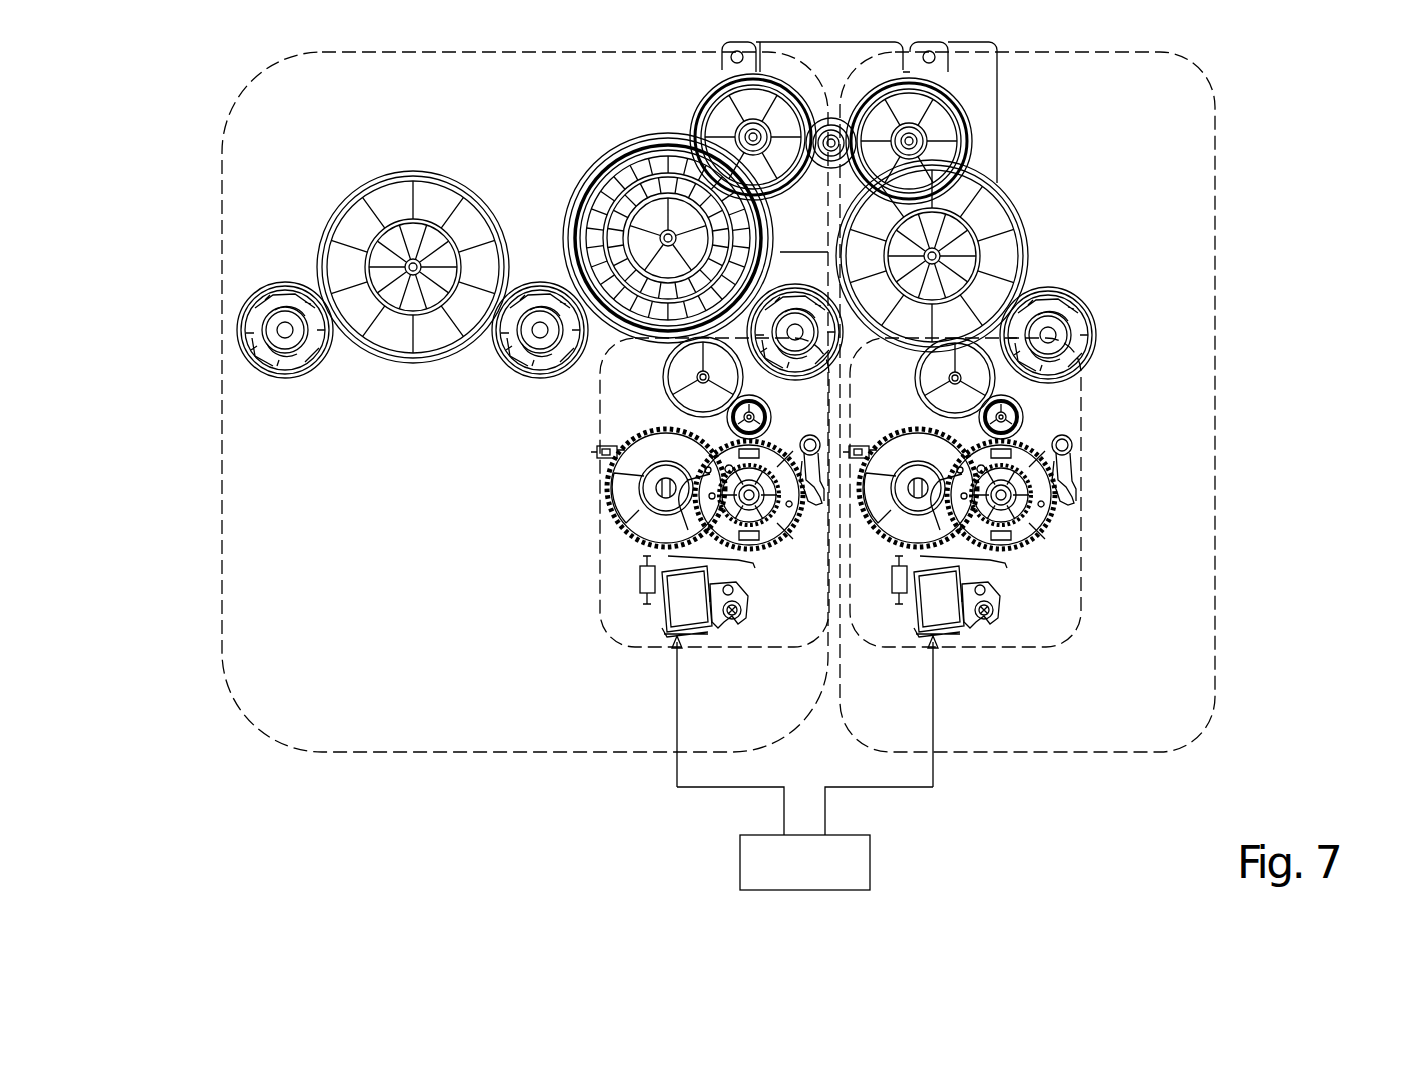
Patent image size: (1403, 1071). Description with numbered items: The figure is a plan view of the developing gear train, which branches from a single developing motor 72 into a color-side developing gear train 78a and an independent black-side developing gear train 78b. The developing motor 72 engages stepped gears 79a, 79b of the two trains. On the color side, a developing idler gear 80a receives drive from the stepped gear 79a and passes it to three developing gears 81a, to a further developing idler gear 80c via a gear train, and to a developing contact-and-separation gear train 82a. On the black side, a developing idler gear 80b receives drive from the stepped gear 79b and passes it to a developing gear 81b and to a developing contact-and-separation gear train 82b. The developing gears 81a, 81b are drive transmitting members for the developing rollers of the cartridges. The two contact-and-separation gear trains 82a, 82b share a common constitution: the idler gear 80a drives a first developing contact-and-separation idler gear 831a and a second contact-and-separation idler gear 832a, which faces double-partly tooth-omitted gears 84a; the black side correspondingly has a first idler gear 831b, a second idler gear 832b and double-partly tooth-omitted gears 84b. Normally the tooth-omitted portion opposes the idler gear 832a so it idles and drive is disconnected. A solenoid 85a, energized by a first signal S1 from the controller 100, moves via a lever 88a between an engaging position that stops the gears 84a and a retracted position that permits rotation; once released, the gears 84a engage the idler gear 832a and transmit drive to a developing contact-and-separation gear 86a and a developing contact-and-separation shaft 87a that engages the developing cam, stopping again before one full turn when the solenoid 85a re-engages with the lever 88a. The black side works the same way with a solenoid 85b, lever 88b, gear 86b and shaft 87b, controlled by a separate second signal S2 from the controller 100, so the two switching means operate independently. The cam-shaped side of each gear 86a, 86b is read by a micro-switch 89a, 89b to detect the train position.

The developing motor 72 is at (831, 125).
The developing gear train 78a is at (222, 178).
The developing gear train 78b is at (1218, 165).
The stepped gear 79a is at (720, 83).
The stepped gear 79b is at (953, 123).
The developing idler gear 80a is at (598, 165).
The developing idler gear 80b is at (993, 215).
The developing idler gear 80c is at (348, 235).
The developing gear 81a is at (292, 382).
The developing gear 81b is at (1075, 325).
The developing contact-and-separation gear train 82a is at (606, 640).
The developing contact-and-separation gear train 82b is at (1083, 575).
The first developing contact-and-separation idler gear 831a is at (665, 378).
The first developing contact-and-separation idler gear 831b is at (993, 388).
The second contact-and-separation idler gear 832a is at (732, 417).
The second developing contact-and-separation idler gear 832b is at (1018, 418).
The double-partly tooth-omitted gears 84a is at (740, 634).
The double-partly tooth-omitted gears 84b is at (1000, 632).
The solenoid 85a is at (700, 618).
The solenoid 85b is at (945, 622).
The developing contact-and-separation gear 86a is at (635, 512).
The developing contact-and-separation gear 86b is at (885, 510).
The developing contact-and-separation shaft 87a is at (640, 572).
The developing contact-and-separation shaft 87b is at (895, 570).
The lever 88a is at (777, 525).
The lever 88b is at (1073, 490).
The micro-switch 89a is at (600, 453).
The micro-switch 89b is at (857, 450).
The first signal S1 is at (708, 788).
The second signal S2 is at (905, 788).
The controller 100 is at (740, 856).